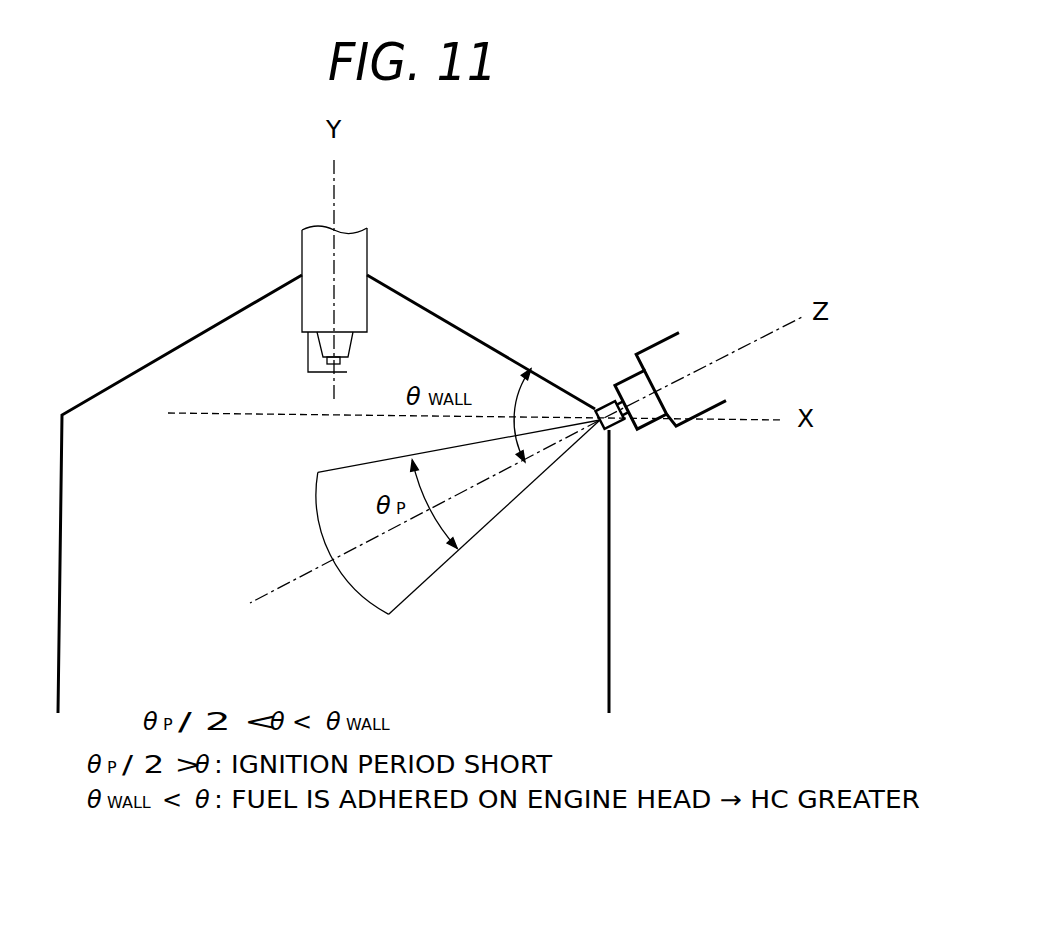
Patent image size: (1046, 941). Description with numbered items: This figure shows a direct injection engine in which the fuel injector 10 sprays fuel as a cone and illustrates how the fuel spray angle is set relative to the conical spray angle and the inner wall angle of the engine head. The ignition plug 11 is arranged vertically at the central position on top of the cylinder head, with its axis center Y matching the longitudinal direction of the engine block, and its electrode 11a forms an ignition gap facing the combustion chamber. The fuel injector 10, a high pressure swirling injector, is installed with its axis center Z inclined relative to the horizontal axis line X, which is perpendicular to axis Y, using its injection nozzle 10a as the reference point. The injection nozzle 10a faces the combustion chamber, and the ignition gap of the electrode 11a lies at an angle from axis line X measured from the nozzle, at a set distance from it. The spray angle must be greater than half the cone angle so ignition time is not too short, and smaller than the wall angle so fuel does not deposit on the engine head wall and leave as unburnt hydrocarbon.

The fuel injector 10 is at (660, 355).
The injection nozzle 10a is at (612, 430).
The ignition plug 11 is at (357, 245).
The electrode 11a is at (308, 366).